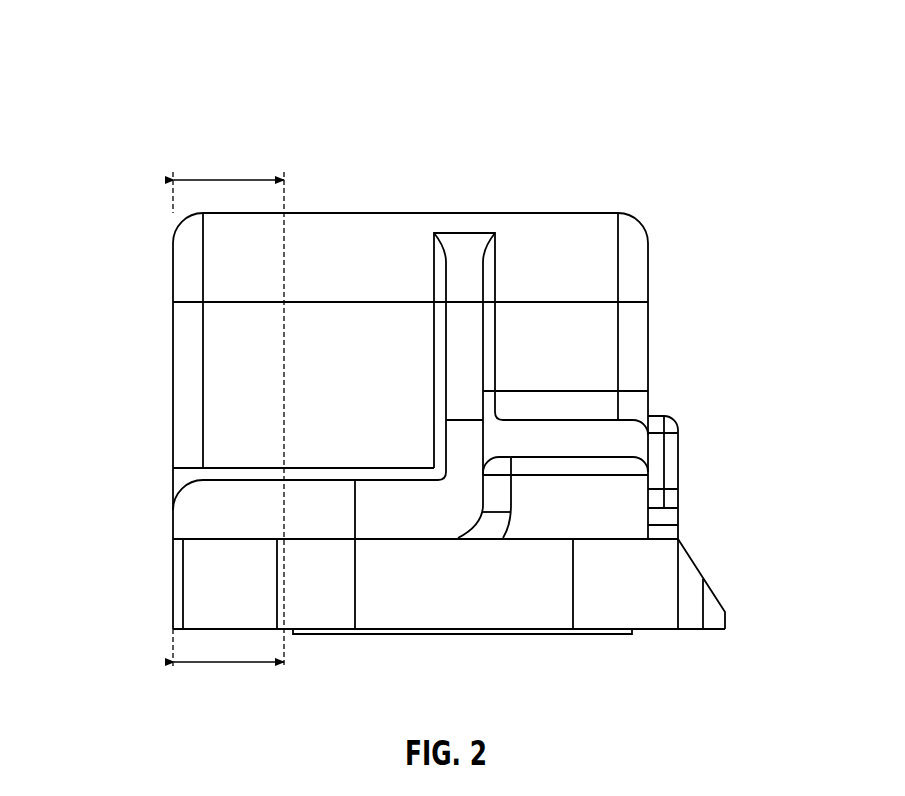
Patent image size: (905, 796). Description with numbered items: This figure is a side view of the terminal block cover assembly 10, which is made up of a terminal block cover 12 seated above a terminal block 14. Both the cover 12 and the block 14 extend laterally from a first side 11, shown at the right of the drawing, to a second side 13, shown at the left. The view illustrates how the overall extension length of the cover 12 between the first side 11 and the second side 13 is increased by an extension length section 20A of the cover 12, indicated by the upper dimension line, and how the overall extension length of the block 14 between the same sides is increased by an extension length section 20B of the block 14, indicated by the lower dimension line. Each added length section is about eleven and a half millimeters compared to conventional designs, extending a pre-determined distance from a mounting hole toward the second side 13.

The terminal block cover assembly 10 is at (140, 56).
The first side 11 is at (676, 169).
The terminal block cover 12 is at (390, 212).
The second side 13 is at (121, 147).
The terminal block 14 is at (450, 612).
The extension length section 20A is at (226, 178).
The extension length section 20B is at (207, 665).